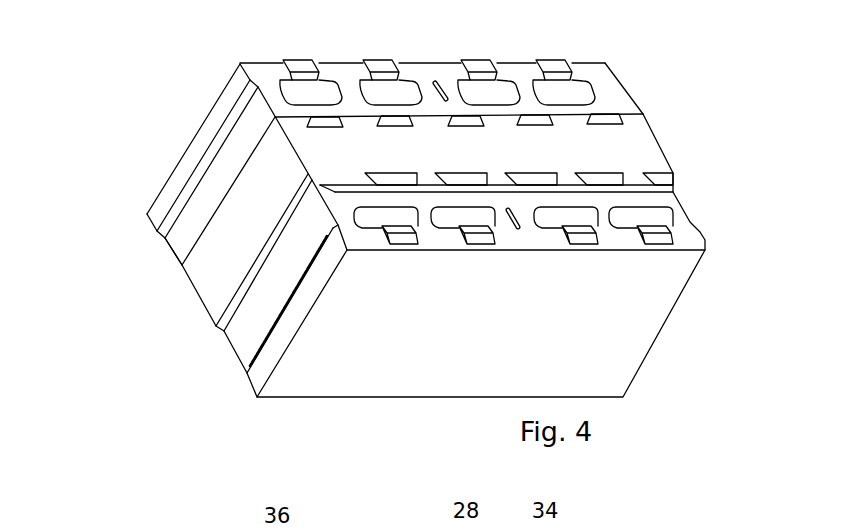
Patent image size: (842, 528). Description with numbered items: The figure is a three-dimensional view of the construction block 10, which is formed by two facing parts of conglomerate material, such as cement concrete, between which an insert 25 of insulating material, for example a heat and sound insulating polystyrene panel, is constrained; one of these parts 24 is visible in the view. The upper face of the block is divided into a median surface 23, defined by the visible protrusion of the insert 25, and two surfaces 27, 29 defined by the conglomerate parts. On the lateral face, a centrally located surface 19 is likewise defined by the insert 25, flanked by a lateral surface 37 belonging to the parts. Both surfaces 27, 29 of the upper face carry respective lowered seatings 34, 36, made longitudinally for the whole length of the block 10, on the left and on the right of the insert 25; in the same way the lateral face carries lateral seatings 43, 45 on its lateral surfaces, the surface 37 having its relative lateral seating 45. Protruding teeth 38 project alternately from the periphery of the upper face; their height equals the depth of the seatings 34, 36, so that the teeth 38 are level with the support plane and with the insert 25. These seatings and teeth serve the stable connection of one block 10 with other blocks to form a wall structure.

The construction block 10 is at (190, 94).
The surface 19 is at (203, 303).
The surface 23 is at (644, 156).
The part 24 is at (364, 404).
The insert 25 is at (181, 297).
The surface 27 is at (680, 204).
The surface 29 is at (523, 72).
The upper seating 34 is at (531, 222).
The upper seating 36 is at (606, 101).
The lateral surface 37 is at (241, 340).
The protruding teeth 38 is at (300, 66).
The lateral seating 43 is at (253, 115).
The lateral seating 45 is at (306, 239).